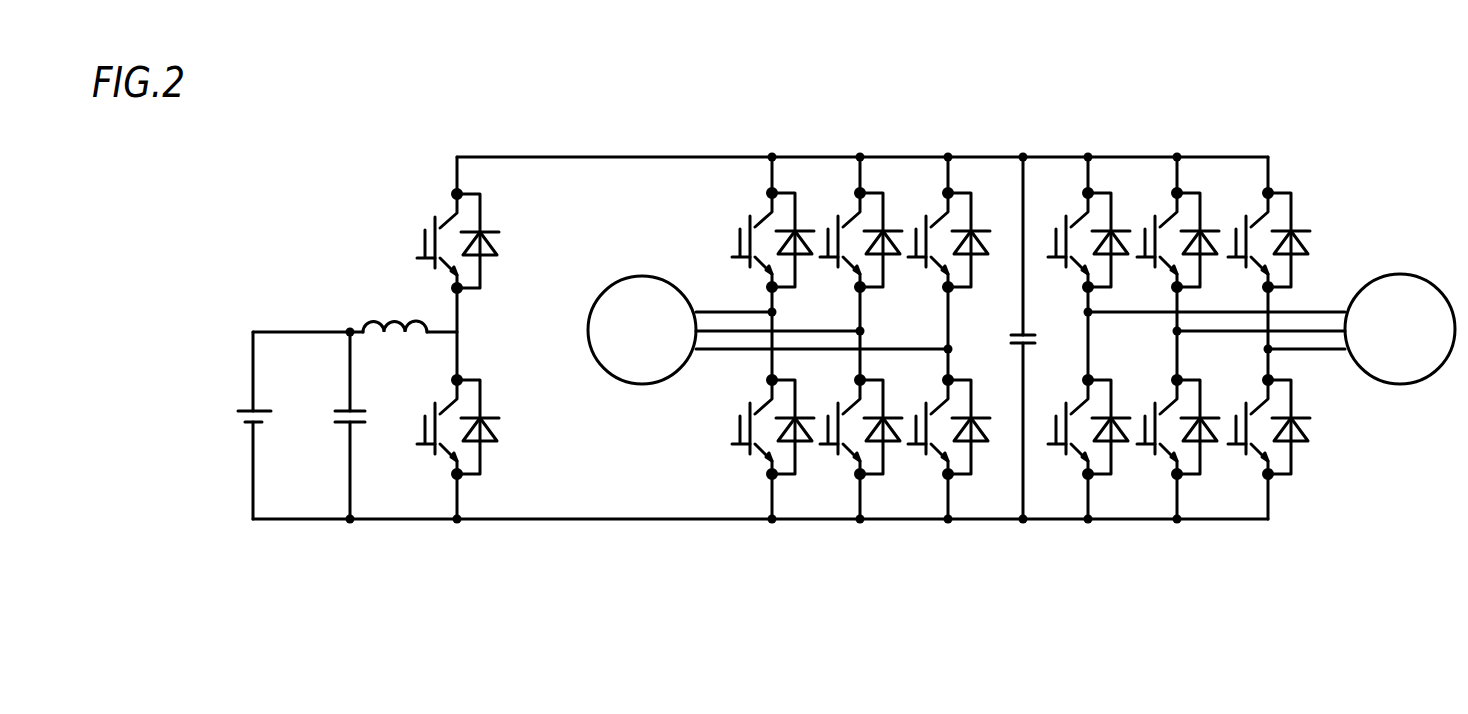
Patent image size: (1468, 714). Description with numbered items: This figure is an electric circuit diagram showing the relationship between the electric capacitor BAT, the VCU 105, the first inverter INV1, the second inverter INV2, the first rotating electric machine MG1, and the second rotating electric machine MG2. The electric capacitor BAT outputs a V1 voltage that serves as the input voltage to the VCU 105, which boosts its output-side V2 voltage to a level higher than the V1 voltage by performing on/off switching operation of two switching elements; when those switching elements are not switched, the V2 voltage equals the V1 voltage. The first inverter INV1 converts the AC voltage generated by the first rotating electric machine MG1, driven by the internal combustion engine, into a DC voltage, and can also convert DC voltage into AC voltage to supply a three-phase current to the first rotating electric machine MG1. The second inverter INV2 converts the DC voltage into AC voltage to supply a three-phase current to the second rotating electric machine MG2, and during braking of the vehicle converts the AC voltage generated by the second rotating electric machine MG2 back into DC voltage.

The VCU 105 is at (505, 145).
The electric capacitor BAT is at (234, 429).
The first inverter INV1 is at (1018, 145).
The second inverter INV2 is at (1307, 145).
The first rotating electric machine MG1 is at (768, 330).
The second rotating electric machine MG2 is at (1271, 329).